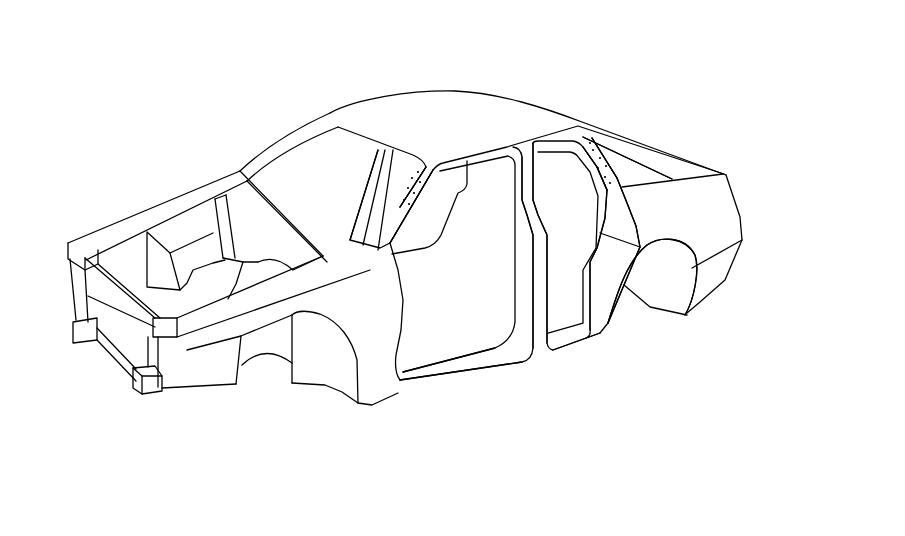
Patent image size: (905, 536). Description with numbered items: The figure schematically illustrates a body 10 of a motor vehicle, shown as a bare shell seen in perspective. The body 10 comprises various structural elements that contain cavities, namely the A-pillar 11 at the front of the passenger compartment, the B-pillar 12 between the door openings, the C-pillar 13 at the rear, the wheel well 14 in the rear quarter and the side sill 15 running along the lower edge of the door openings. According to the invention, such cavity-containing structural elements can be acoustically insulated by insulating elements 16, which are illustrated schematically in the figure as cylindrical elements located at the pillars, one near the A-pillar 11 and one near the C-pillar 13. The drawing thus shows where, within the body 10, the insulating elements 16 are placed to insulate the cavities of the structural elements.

The body 10 is at (421, 72).
The A-pillar 11 is at (393, 217).
The B-pillar 12 is at (522, 147).
The C-pillar 13 is at (627, 163).
The wheel well 14 is at (607, 277).
The side sill 15 is at (463, 360).
The insulating element 16 is at (421, 167).